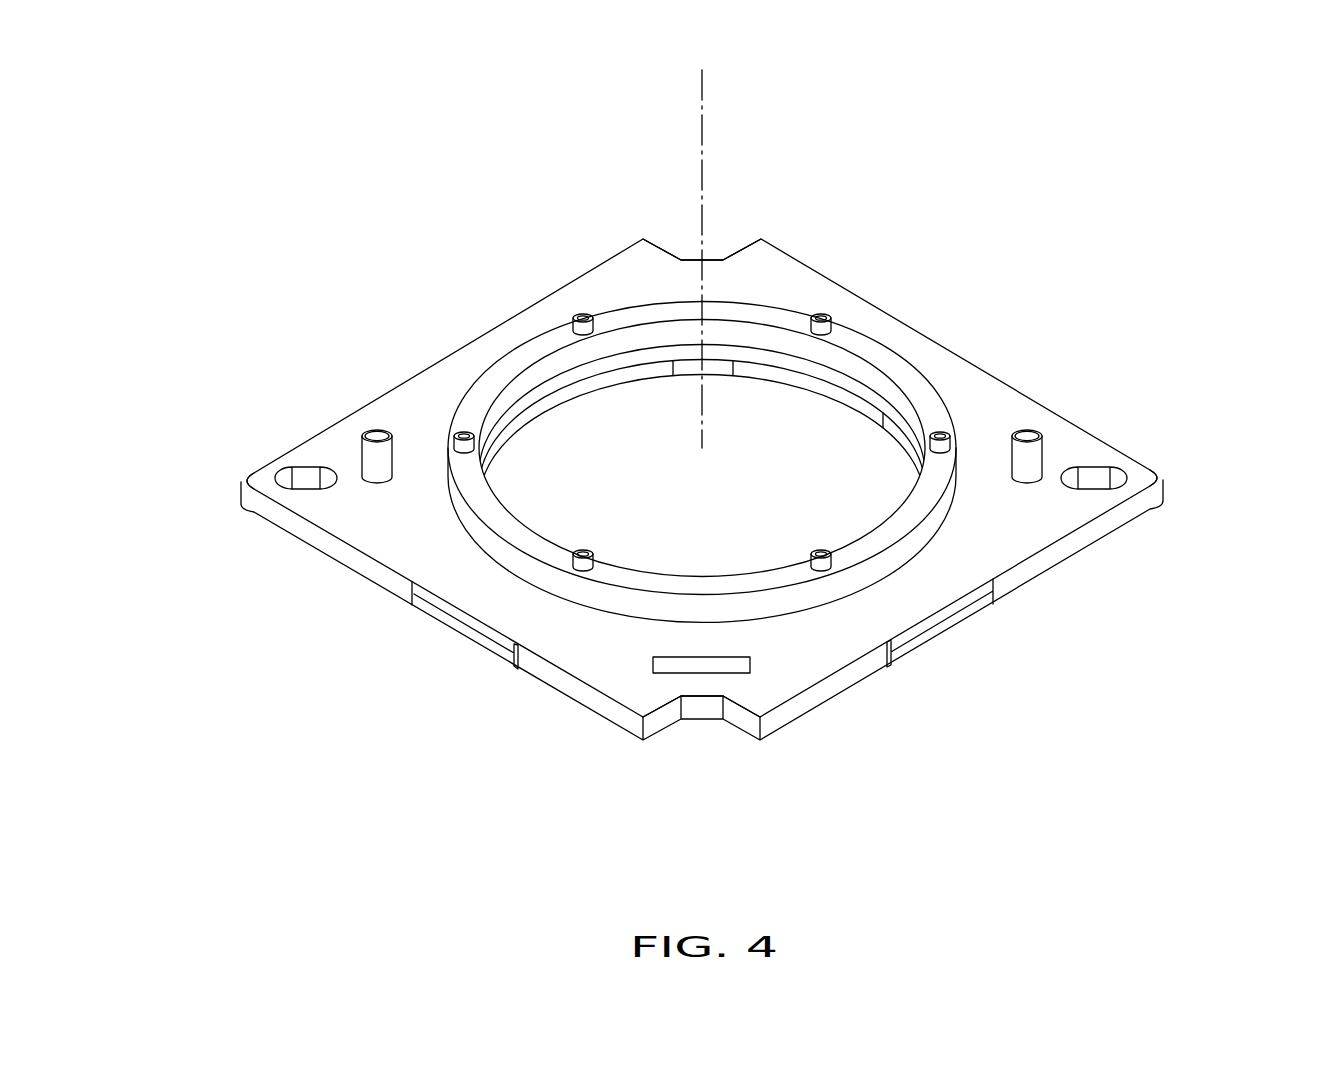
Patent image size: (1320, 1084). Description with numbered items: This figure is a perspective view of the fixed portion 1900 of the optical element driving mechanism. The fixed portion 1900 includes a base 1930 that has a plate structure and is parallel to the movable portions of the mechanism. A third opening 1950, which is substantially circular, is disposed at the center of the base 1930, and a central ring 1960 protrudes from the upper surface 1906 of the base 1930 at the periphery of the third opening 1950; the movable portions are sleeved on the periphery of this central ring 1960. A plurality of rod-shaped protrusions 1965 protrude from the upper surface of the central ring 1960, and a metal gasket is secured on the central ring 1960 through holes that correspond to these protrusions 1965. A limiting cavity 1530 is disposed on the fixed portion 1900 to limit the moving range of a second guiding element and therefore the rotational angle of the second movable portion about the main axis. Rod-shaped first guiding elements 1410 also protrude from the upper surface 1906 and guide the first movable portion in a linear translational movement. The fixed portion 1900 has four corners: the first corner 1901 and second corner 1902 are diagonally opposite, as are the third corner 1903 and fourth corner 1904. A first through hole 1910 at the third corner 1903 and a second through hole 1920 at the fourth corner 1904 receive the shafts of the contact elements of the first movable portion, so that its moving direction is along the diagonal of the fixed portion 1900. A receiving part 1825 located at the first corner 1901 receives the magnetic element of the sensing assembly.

The fixed portion 1900 is at (263, 97).
The first corner 1901 is at (682, 748).
The second corner 1902 is at (682, 225).
The third corner 1903 is at (1127, 517).
The fourth corner 1904 is at (277, 517).
The upper surface 1906 is at (453, 575).
The first through hole 1910 is at (1102, 483).
The second through hole 1920 is at (302, 480).
The base 1930 is at (378, 532).
The third opening 1950 is at (853, 455).
The central ring 1960 is at (522, 358).
The protrusions 1965 is at (583, 314).
The first guiding element 1410 is at (377, 433).
The limiting cavity 1530 is at (717, 367).
The receiving part 1825 is at (738, 665).